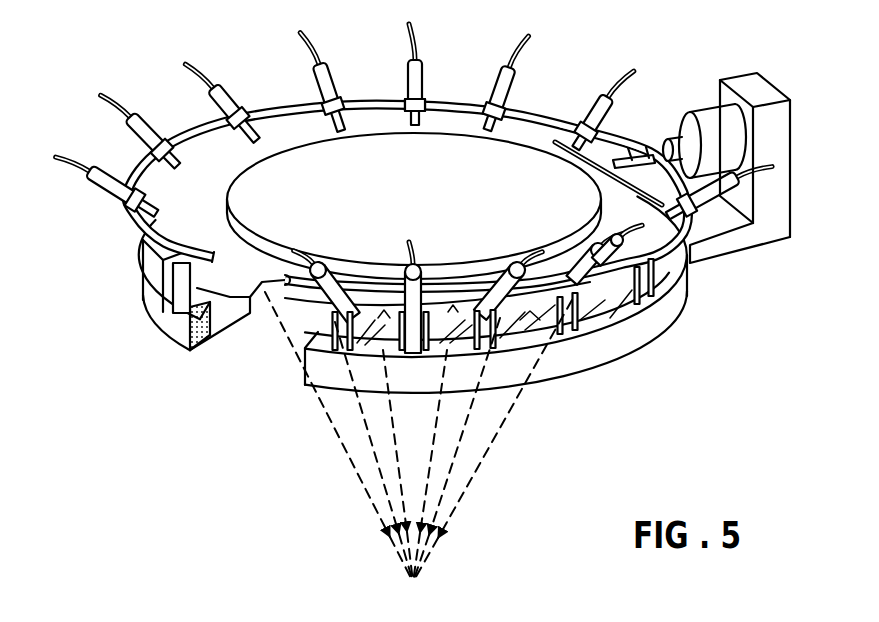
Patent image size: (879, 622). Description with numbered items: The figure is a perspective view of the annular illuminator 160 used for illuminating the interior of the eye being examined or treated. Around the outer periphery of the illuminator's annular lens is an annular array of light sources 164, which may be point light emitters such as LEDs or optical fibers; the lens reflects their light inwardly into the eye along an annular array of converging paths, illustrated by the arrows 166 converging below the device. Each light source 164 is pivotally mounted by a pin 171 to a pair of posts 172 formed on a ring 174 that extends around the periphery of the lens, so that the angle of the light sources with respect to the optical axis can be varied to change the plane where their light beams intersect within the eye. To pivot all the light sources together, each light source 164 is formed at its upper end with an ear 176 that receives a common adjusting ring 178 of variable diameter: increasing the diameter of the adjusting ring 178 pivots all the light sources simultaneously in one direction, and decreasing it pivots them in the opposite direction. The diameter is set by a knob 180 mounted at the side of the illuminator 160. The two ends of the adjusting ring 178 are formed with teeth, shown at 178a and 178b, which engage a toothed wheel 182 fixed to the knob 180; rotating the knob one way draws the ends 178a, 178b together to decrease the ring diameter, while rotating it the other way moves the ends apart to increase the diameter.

The illuminator 160 is at (158, 336).
The light sources 164 is at (97, 200).
The arrows 166 is at (353, 470).
The pin 171 is at (434, 278).
The posts 172 is at (592, 338).
The ring 174 is at (667, 313).
The ear 176 is at (403, 98).
The adjusting ring 178 is at (270, 115).
The toothed end of adjusting ring 178a is at (622, 122).
The toothed end of adjusting ring 178b is at (590, 168).
The knob 180 is at (735, 152).
The toothed wheel 182 is at (641, 156).